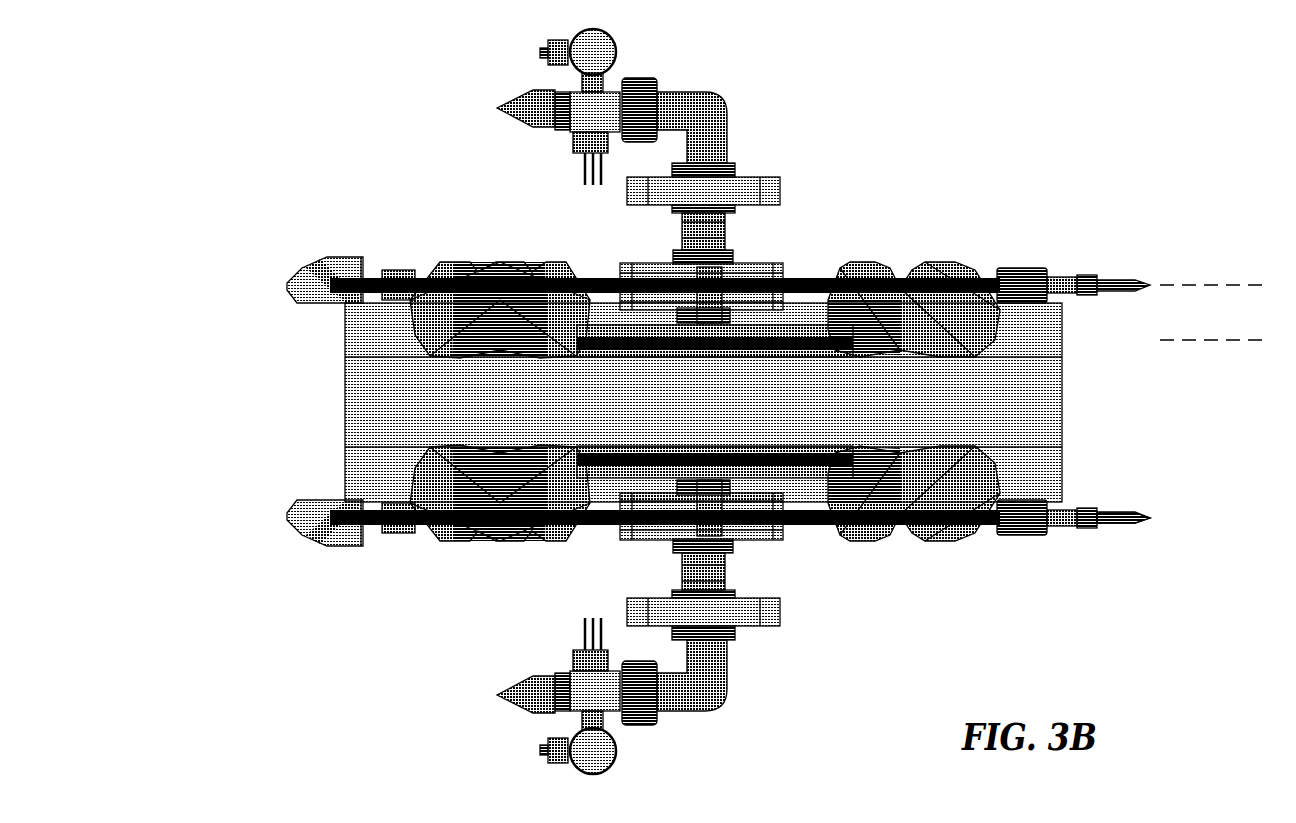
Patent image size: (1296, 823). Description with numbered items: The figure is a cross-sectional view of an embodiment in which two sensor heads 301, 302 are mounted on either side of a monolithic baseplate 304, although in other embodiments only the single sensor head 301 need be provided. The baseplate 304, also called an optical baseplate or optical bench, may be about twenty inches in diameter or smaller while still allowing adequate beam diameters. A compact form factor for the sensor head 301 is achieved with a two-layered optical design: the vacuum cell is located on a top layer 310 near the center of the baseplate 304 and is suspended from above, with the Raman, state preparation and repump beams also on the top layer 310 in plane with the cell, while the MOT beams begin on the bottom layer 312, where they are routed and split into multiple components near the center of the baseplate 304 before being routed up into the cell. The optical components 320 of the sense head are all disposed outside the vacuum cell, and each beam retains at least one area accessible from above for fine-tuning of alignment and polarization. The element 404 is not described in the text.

The sensor head 301 is at (265, 203).
The sensor head 302 is at (268, 444).
The monolithic baseplate 304 is at (1043, 405).
The top layer 310 is at (1205, 285).
The bottom layer 312 is at (1213, 342).
The optical components 320 is at (450, 105).
The probe tip 404 is at (1133, 527).